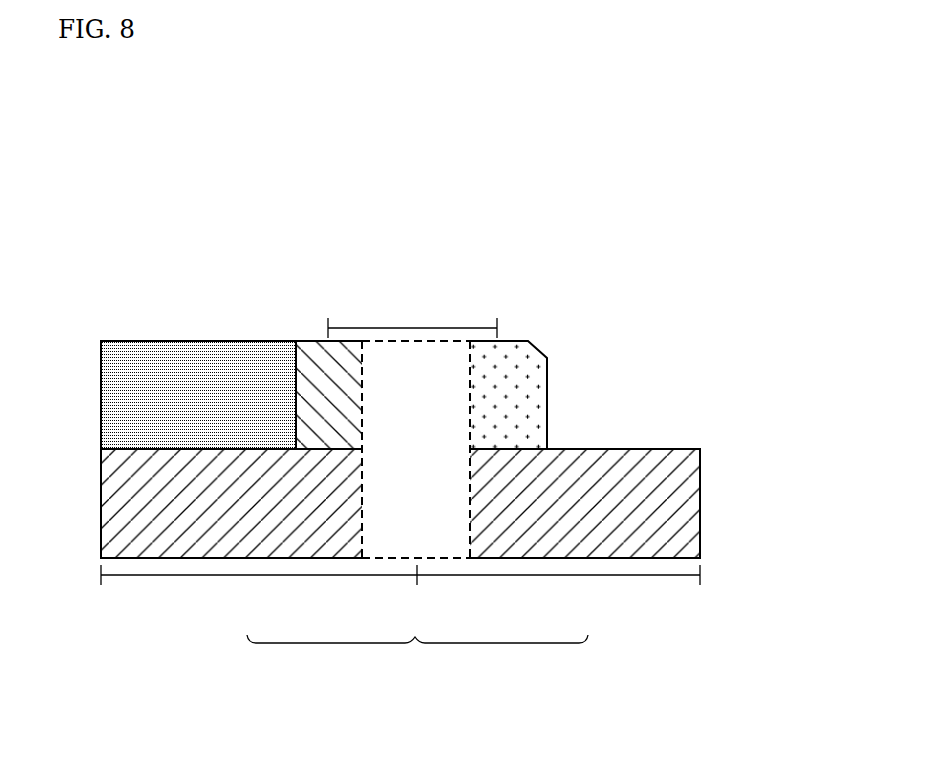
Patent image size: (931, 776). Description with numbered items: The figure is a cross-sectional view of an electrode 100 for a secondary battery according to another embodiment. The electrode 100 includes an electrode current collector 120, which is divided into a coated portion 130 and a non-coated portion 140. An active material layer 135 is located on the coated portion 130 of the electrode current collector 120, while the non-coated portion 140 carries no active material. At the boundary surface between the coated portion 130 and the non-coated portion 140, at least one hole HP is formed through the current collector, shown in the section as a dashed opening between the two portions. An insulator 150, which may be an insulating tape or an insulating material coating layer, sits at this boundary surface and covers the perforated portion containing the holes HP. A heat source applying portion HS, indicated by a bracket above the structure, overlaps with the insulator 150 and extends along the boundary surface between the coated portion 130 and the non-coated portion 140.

The electrode 100 is at (150, 253).
The electrode current collector 120 is at (694, 515).
The coated portion 130 is at (270, 575).
The non-coated portion 140 is at (562, 575).
The active material layer 135 is at (223, 357).
The insulator 150 is at (517, 338).
The heat source applying portion HS is at (350, 327).
The hole HP is at (362, 383).